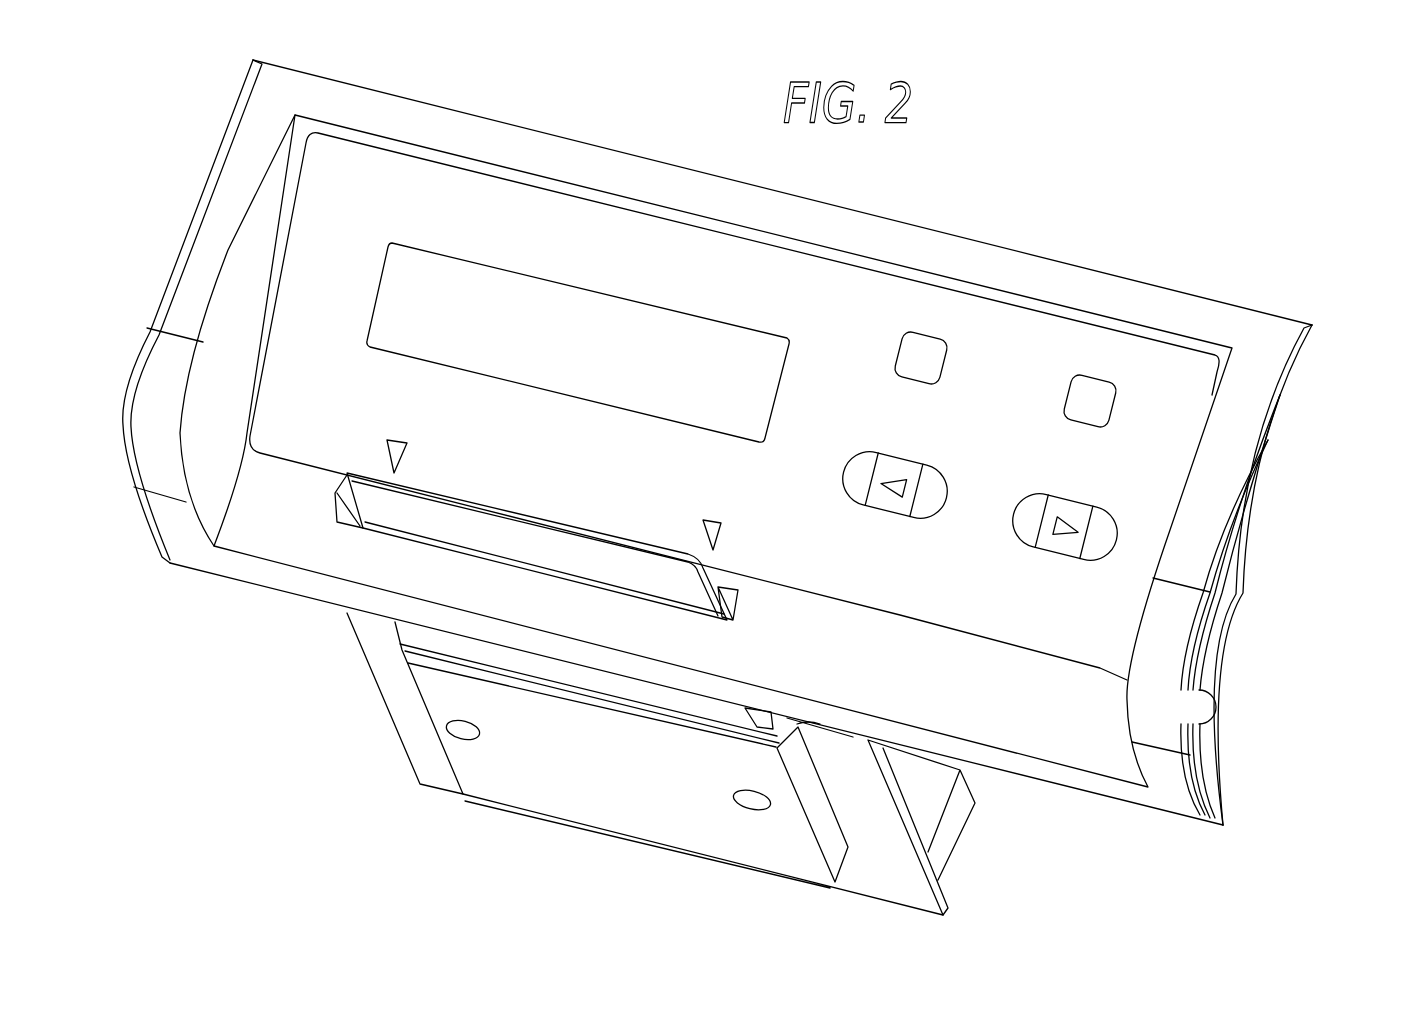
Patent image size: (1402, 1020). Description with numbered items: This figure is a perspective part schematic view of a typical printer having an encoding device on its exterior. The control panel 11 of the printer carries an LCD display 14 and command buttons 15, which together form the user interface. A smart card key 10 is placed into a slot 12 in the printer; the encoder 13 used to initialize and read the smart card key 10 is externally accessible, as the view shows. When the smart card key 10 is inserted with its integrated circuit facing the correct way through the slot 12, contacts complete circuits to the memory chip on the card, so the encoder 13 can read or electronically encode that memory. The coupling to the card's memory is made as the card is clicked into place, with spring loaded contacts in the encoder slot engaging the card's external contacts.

The smart card key 10 is at (385, 512).
The control panel 11 is at (1140, 315).
The slot 12 is at (724, 600).
The encoder 13 is at (540, 783).
The LCD display 14 is at (403, 298).
The command buttons 15 is at (1072, 407).